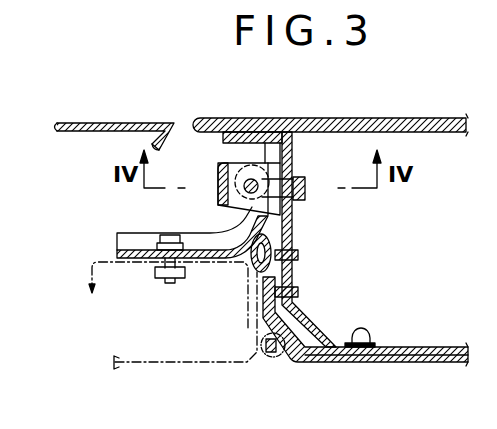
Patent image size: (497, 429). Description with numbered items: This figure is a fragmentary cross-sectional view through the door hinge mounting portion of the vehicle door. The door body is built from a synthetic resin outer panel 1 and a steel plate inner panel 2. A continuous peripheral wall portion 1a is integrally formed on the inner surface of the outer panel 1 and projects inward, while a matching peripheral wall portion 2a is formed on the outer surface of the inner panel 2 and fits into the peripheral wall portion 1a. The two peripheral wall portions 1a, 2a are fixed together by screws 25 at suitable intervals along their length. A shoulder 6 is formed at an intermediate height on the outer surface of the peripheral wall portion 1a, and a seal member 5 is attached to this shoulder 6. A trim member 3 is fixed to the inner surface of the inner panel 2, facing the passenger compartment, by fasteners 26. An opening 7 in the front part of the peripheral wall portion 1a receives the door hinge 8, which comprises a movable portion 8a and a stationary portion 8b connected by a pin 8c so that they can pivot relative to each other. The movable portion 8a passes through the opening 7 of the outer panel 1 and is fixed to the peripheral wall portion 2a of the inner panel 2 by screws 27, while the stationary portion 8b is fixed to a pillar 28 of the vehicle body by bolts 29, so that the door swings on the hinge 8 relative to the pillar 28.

The outer panel 1 is at (434, 112).
The peripheral wall portion 1a is at (298, 270).
The inner panel 2 is at (424, 340).
The peripheral wall portion 2a is at (299, 245).
The trim member 3 is at (408, 373).
The seal member 5 is at (243, 267).
The shoulder 6 is at (272, 240).
The opening 7 is at (292, 165).
The door hinge 8 is at (207, 270).
The movable portion 8a is at (218, 175).
The stationary portion 8b is at (125, 233).
The pin 8c is at (218, 191).
The screw 25 is at (301, 294).
The fastener 26 is at (360, 364).
The screw 27 is at (302, 188).
The pillar 28 is at (143, 366).
The bolt 29 is at (170, 283).